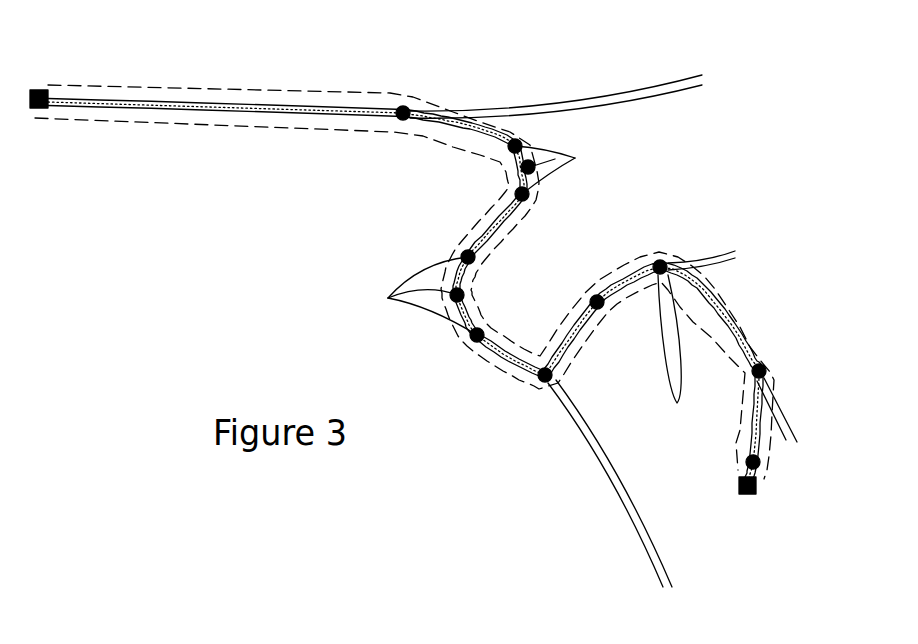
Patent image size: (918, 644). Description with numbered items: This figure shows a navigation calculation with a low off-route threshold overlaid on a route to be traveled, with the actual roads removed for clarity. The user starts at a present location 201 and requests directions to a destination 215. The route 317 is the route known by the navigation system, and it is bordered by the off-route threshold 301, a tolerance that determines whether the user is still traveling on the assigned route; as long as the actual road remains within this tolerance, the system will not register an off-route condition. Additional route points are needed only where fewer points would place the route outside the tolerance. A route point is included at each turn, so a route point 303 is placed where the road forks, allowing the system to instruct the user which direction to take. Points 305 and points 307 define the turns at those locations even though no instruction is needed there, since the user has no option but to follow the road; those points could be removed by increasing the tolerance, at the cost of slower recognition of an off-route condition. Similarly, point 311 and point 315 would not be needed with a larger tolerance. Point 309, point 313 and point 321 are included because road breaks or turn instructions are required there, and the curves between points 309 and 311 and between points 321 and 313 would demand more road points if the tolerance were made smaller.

The present location 201 is at (34, 90).
The destination 215 is at (757, 486).
The off-route threshold 301 is at (280, 120).
The route point 303 is at (405, 121).
The points 305 is at (575, 158).
The points 307 is at (388, 298).
The point 309 is at (548, 388).
The point 311 is at (605, 300).
The point 313 is at (767, 364).
The point 315 is at (745, 466).
The route 317 is at (157, 103).
The point 321 is at (722, 328).